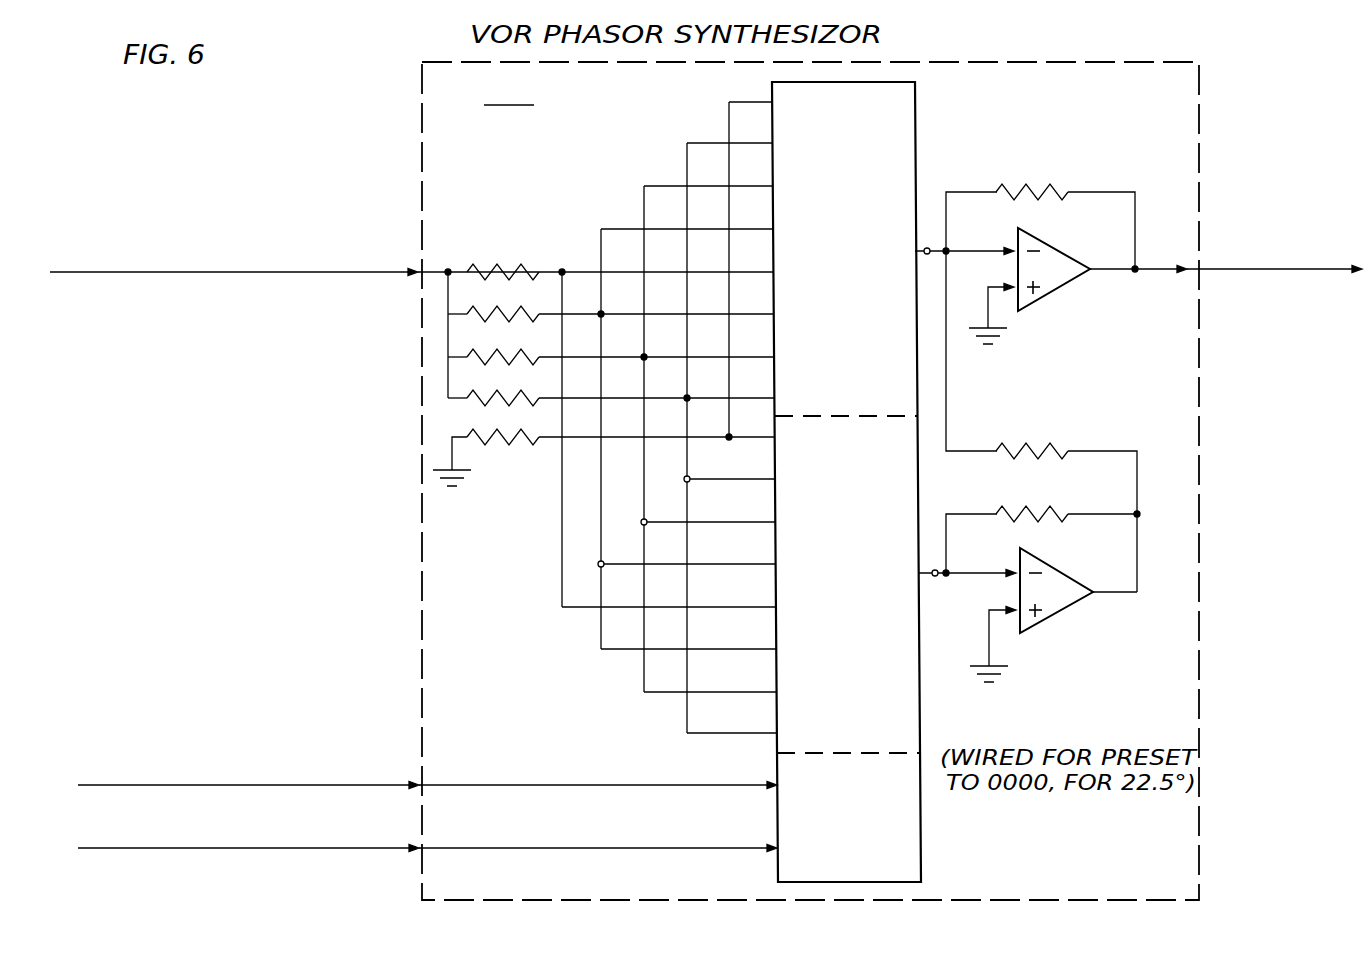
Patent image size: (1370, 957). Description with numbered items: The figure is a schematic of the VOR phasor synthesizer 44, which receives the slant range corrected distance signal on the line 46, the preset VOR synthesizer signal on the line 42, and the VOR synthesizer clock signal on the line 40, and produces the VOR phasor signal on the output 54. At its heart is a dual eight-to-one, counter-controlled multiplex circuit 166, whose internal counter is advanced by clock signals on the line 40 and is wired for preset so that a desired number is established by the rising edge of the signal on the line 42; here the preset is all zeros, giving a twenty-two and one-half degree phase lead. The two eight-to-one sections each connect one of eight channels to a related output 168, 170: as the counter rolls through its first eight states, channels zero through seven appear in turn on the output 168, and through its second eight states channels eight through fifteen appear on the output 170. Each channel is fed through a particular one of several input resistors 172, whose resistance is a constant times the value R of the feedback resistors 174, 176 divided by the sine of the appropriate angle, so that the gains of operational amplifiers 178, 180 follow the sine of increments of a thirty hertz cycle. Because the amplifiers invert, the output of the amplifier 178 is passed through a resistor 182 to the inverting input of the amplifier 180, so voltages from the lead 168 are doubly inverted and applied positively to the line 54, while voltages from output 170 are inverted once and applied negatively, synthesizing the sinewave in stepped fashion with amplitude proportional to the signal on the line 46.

The VOR phasor synthesizer 44 is at (734, 481).
The line carrying the slant range corrected distance signal 46 is at (213, 274).
The line carrying the preset VOR synthesizer signal 42 is at (198, 785).
The line carrying the VOR synthesizer clock signal 40 is at (265, 848).
The VOR phasor output line 54 is at (1258, 271).
The dual 8:1 counter-controlled multiplex circuit 166 is at (915, 114).
The multiplexer output 168 is at (935, 576).
The multiplexer output 170 is at (928, 249).
The input resistors 172 is at (603, 283).
The feedback resistor 174 is at (1038, 508).
The feedback resistor 176 is at (1040, 188).
The operational amplifier 178 is at (1060, 610).
The operational amplifier 180 is at (1050, 290).
The resistor 182 is at (1035, 447).